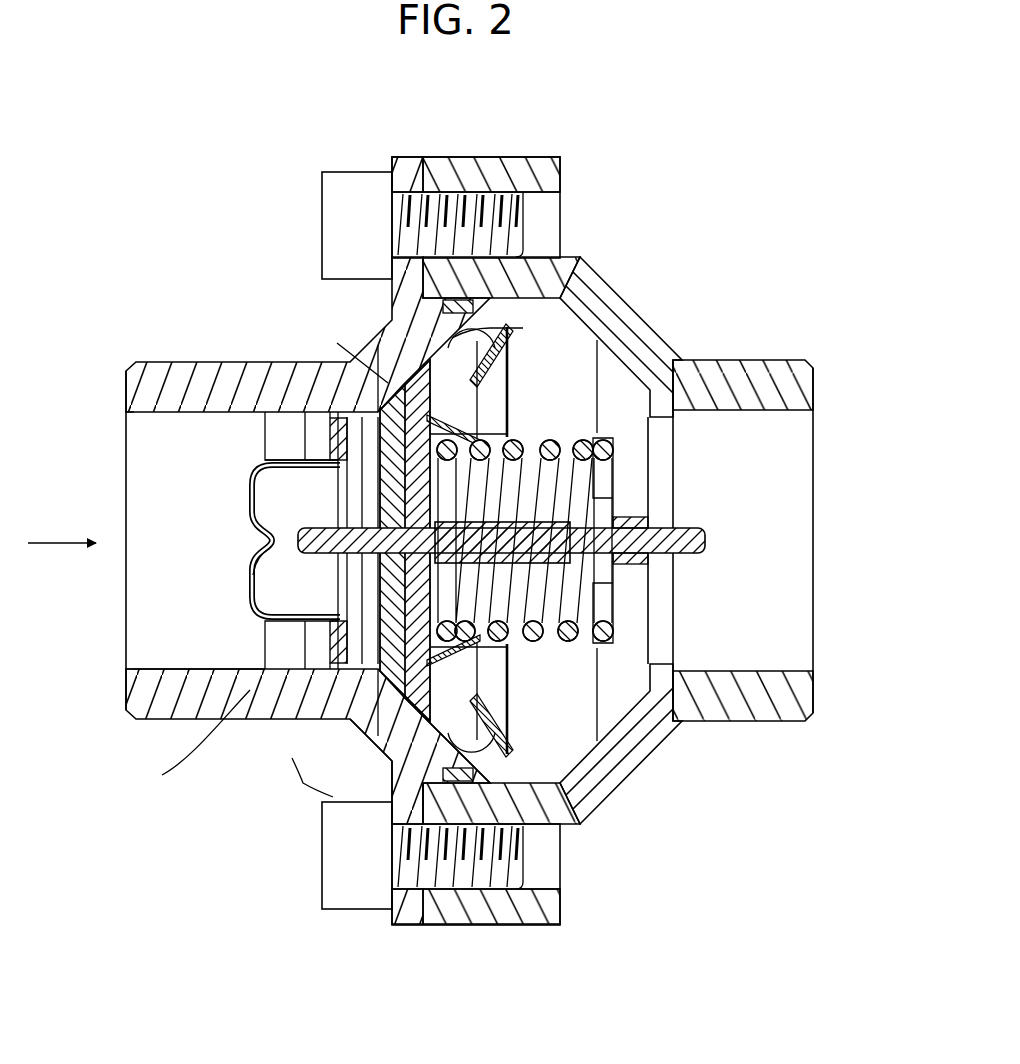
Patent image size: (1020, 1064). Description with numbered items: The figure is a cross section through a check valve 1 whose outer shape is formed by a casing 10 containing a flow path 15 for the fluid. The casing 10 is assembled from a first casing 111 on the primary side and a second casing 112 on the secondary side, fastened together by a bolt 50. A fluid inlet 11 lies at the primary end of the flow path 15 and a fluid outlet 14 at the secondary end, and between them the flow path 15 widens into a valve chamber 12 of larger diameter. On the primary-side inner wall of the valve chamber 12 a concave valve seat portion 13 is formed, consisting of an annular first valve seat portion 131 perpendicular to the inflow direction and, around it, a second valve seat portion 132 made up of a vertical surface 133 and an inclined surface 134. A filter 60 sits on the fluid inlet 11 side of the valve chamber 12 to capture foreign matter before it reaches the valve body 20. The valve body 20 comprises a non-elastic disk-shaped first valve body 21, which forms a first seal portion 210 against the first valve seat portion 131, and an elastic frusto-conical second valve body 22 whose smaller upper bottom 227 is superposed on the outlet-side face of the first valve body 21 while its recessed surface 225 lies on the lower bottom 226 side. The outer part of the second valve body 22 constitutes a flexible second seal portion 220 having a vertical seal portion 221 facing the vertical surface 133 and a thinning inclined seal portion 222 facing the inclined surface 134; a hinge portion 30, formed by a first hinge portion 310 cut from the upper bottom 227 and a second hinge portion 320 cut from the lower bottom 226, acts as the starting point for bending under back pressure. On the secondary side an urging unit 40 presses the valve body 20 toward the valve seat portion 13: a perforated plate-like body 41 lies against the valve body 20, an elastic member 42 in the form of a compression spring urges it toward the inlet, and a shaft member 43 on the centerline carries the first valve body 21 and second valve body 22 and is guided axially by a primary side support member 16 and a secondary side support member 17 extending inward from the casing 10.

The check valve 1 is at (740, 157).
The casing 10 is at (463, 541).
The fluid inlet 11 is at (112, 434).
The valve chamber 12 is at (540, 308).
The valve seat portion 13 is at (352, 618).
The fluid outlet 14 is at (830, 452).
The flow path 15 is at (192, 660).
The primary side support member 16 is at (262, 568).
The secondary side support member 17 is at (648, 500).
The valve body 20 is at (347, 473).
The first valve body 21 is at (238, 482).
The second valve body 22 is at (384, 482).
The hinge portion 30 is at (323, 492).
The urging unit 40 is at (586, 645).
The plate-like body 41 is at (507, 735).
The elastic member 42 is at (567, 642).
The shaft member 43 is at (627, 552).
The bolt 50 is at (360, 183).
The filter 60 is at (262, 533).
The first casing 111 is at (128, 678).
The second casing 112 is at (572, 541).
The first valve seat portion 131 is at (357, 665).
The second valve seat portion 132 is at (327, 792).
The vertical surface 133 is at (433, 668).
The inclined surface 134 is at (433, 722).
The first seal portion 210 is at (373, 367).
The second seal portion 220 is at (384, 493).
The vertical seal portion 221 is at (392, 372).
The inclined seal portion 222 is at (395, 362).
The surface on lower bottom side 225 is at (510, 458).
The lower bottom 226 is at (490, 372).
The upper bottom 227 is at (328, 460).
The first hinge portion 310 is at (375, 398).
The second hinge portion 320 is at (398, 422).